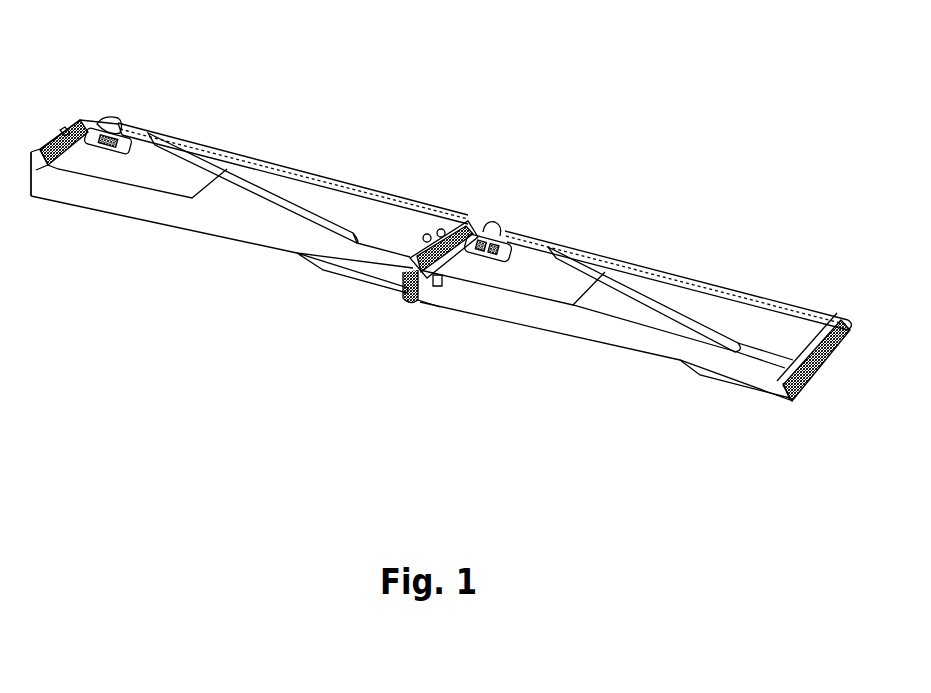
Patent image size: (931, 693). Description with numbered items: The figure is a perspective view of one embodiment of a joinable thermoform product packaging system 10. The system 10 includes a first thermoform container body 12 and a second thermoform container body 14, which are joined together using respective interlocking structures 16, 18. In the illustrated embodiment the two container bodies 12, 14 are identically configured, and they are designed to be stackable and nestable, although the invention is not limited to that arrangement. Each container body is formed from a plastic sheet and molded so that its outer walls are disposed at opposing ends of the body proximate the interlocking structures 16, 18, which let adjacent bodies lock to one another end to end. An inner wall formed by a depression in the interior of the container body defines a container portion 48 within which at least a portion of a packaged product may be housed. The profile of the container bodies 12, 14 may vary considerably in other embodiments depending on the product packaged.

The joinable thermoform product packaging system 10 is at (194, 82).
The first thermoform container body 12 is at (308, 164).
The second thermoform container body 14 is at (663, 273).
The interlocking structure 16 is at (415, 303).
The interlocking structure 18 is at (467, 220).
The container portion 48 is at (353, 210).